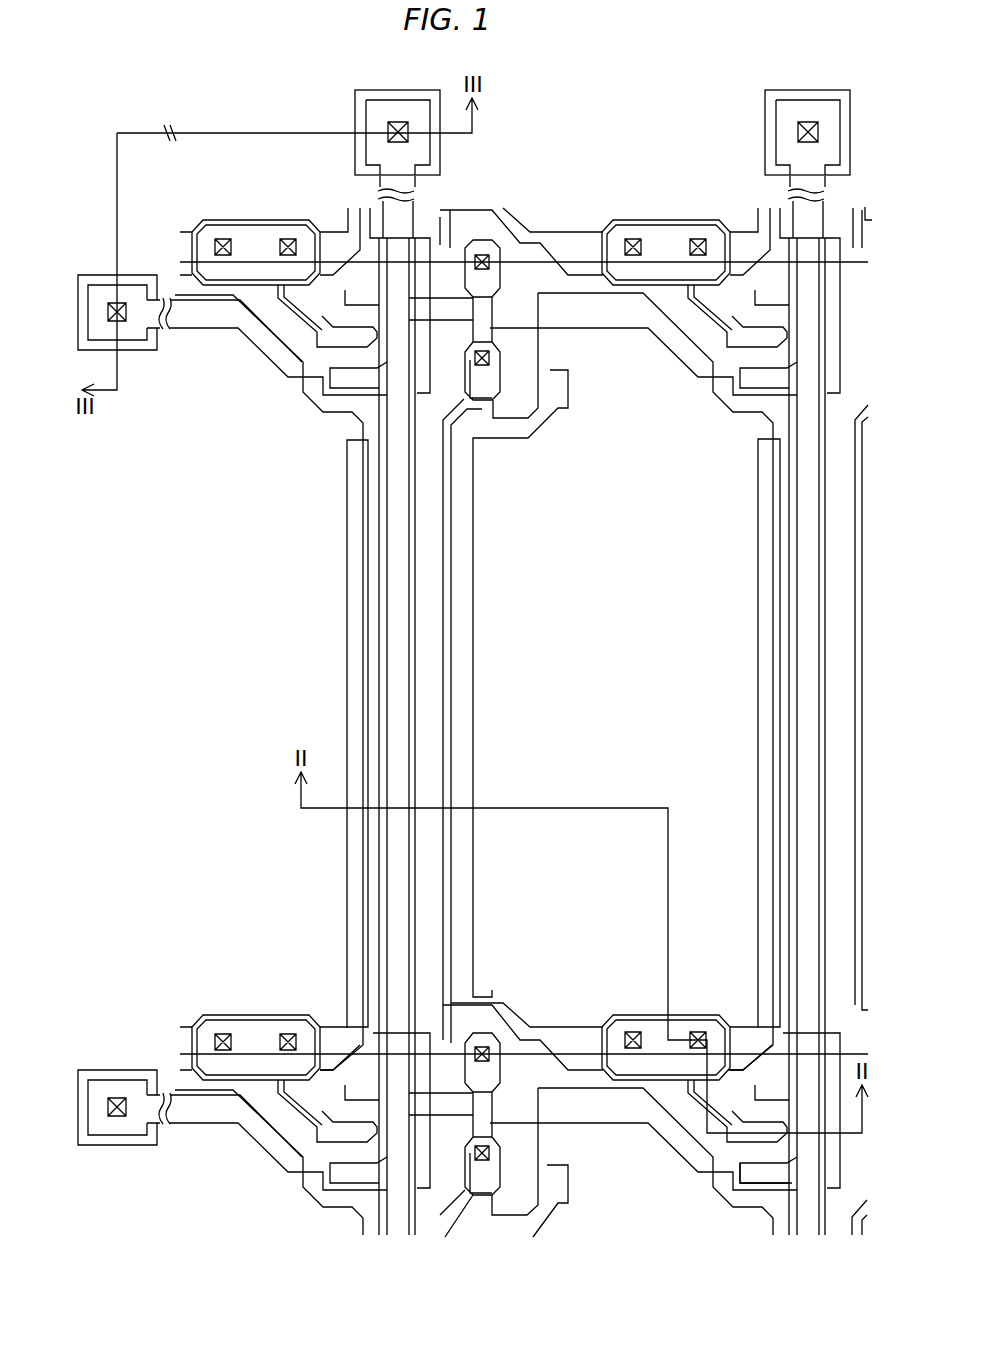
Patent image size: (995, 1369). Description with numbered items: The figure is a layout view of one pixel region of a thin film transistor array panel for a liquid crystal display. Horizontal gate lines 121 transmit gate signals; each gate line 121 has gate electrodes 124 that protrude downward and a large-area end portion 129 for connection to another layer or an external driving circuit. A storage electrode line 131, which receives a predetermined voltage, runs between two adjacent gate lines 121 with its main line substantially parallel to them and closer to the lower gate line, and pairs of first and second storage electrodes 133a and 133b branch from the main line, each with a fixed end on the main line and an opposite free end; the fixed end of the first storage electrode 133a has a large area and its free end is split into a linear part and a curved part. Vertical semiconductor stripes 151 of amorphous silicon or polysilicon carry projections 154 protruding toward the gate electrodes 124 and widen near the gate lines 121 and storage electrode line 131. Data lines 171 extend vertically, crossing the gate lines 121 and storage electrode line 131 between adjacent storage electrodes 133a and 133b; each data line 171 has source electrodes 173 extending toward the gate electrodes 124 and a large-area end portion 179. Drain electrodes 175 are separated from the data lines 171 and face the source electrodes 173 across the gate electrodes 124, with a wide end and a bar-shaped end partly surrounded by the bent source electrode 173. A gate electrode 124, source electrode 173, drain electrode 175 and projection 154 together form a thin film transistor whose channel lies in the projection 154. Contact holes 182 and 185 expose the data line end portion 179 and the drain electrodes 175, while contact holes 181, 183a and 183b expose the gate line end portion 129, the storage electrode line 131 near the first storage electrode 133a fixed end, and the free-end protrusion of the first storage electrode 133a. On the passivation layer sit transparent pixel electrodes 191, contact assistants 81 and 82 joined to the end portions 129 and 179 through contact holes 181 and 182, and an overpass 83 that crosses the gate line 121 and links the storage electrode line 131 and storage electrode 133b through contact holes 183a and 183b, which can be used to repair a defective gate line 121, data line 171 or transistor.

The contact assistant 81 is at (125, 351).
The contact assistant 82 is at (441, 156).
The overpass 83 is at (504, 376).
The gate line 121 is at (593, 1125).
The gate electrode 124 is at (819, 1137).
The end portion of gate line 129 is at (148, 352).
The storage electrode line 131 is at (857, 1053).
The first storage electrode 133a is at (474, 499).
The second storage electrode 133b is at (757, 505).
The semiconductor stripe 151 is at (387, 637).
The projection 154 is at (727, 1185).
The data line 171 is at (379, 592).
The source electrode 173 is at (745, 1210).
The drain electrode 175 is at (717, 1135).
The end portion of data line 179 is at (366, 113).
The contact hole 181 is at (112, 304).
The contact hole 182 is at (398, 121).
The contact hole 183a is at (482, 1045).
The contact hole 183b is at (491, 357).
The contact hole 185 is at (698, 1032).
The pixel electrode 191 is at (347, 537).